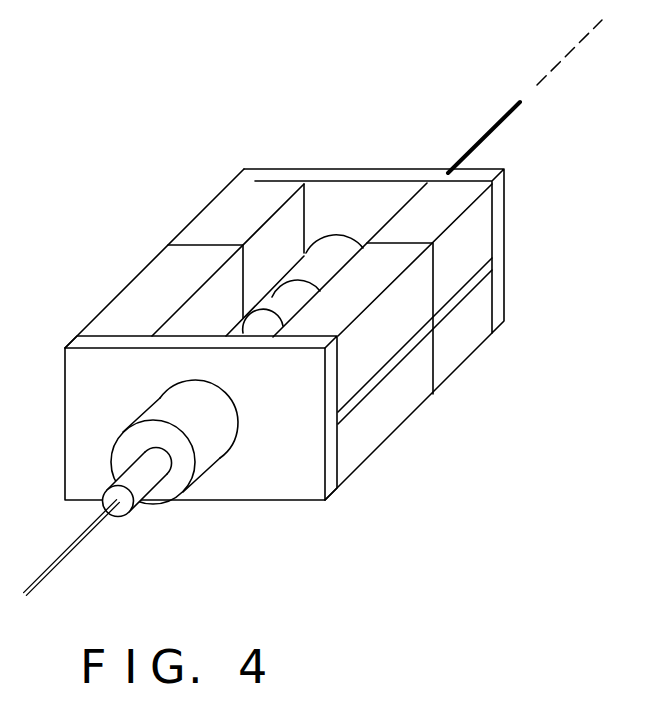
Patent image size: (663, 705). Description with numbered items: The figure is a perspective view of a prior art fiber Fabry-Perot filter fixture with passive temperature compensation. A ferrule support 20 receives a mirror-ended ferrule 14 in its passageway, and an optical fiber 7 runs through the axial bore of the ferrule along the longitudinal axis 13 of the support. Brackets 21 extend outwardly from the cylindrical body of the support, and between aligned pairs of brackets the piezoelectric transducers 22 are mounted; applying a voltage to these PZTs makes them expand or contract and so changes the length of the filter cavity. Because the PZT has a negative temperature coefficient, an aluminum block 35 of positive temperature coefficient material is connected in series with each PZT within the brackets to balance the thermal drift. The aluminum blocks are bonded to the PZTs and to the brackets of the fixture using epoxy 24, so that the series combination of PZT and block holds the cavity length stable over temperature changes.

The optical fiber 7 is at (47, 558).
The longitudinal axis 13 is at (562, 68).
The mirror-ended ferrule 14 is at (143, 493).
The ferrule support 20 is at (210, 455).
The bracket 21 is at (263, 169).
The piezoelectric transducer 22 is at (110, 298).
The epoxy 24 is at (228, 178).
The aluminum block 35 is at (199, 210).